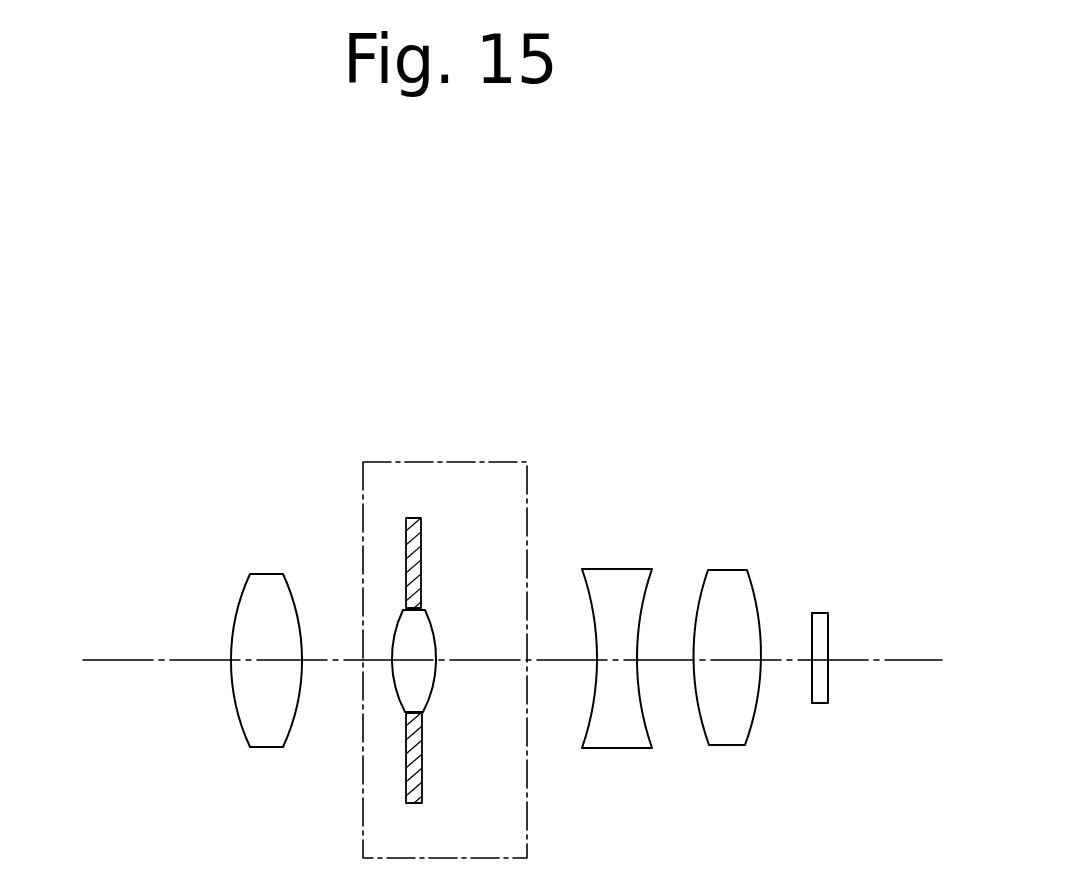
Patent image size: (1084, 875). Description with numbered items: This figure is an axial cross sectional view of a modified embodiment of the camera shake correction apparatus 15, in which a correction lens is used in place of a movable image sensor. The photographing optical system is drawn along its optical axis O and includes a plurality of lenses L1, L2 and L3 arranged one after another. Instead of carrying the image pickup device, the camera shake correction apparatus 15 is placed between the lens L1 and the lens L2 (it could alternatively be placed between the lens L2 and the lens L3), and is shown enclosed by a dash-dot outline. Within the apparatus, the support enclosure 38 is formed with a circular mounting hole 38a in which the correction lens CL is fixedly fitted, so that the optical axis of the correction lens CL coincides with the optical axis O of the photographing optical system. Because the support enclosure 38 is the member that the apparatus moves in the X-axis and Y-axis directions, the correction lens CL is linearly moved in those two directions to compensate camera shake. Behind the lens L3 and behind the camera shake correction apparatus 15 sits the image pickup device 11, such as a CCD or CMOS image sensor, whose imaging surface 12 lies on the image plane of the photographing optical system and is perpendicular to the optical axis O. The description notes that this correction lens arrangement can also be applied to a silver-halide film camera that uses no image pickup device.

The optical axis O is at (150, 660).
The lens L1 is at (268, 600).
The camera shake correction apparatus 15 is at (447, 460).
The support enclosure 38 is at (421, 528).
The circular mounting hole 38a is at (430, 624).
The correction lens CL is at (416, 681).
The lens L2 is at (615, 590).
The lens L3 is at (728, 590).
The image pickup device 11 is at (820, 622).
The imaging surface 12 is at (812, 674).